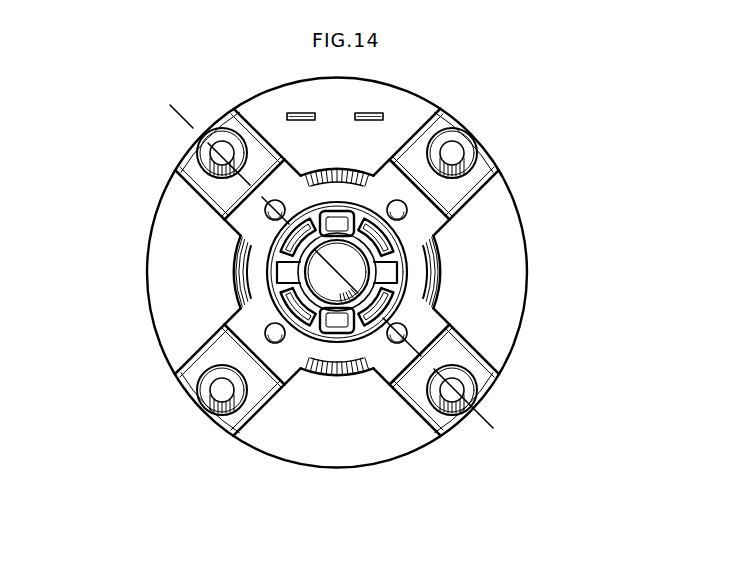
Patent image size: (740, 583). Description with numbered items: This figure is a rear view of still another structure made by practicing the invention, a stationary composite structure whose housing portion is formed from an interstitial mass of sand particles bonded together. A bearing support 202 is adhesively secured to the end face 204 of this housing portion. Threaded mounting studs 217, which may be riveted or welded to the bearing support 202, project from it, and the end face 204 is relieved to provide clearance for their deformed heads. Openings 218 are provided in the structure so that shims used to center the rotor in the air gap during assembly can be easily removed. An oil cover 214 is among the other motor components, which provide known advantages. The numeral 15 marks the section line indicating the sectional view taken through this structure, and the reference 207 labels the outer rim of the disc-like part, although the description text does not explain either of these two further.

The section line 15- 15 is at (484, 416).
The bearing support 202 is at (430, 225).
The end face 204 is at (353, 447).
The plate rim 207 is at (603, 317).
The oil cover 214 is at (287, 272).
The threaded mounting stud 217 is at (218, 393).
The opening 218 is at (422, 260).